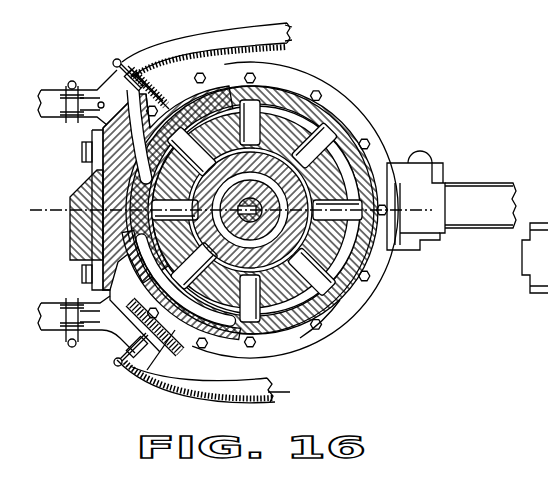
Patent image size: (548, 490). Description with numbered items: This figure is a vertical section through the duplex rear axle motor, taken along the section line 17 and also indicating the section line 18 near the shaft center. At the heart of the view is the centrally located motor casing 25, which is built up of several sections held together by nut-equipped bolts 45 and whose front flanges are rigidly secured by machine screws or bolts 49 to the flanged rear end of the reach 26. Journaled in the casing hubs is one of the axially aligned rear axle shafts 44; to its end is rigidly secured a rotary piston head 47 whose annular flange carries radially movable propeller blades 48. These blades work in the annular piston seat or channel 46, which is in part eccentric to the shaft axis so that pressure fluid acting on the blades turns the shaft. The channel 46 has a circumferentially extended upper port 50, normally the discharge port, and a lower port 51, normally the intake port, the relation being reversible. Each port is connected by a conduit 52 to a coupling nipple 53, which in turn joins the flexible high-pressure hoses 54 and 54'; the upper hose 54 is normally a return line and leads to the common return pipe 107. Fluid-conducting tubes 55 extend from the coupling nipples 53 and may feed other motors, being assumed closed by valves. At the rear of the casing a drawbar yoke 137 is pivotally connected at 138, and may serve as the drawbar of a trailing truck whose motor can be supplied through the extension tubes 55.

The common return pipe 107 is at (41, 117).
The flexible high-pressure hose 54 is at (75, 82).
The coupling nipple 53 is at (93, 90).
The conduit 52 is at (117, 58).
The upper port 50 is at (182, 113).
The fluid-conducting hose or tube 55 is at (299, 36).
The nut-equipped bolt 45 is at (254, 77).
The motor casing 25 is at (320, 100).
The rear axle shaft 44 is at (348, 126).
The pivotal connection 138 is at (428, 158).
The drawbar yoke 137 is at (490, 188).
The axis 17 is at (43, 178).
The shaft 18 is at (235, 192).
The machine screw or bolt 49 is at (82, 150).
The reach beam 26 is at (72, 188).
The flexible high-pressure hose 54' is at (86, 312).
The rotary piston head 47 is at (345, 243).
The annular piston seat or channel 46 is at (335, 268).
The propeller blade 48 is at (348, 300).
The lower port 51 is at (149, 373).